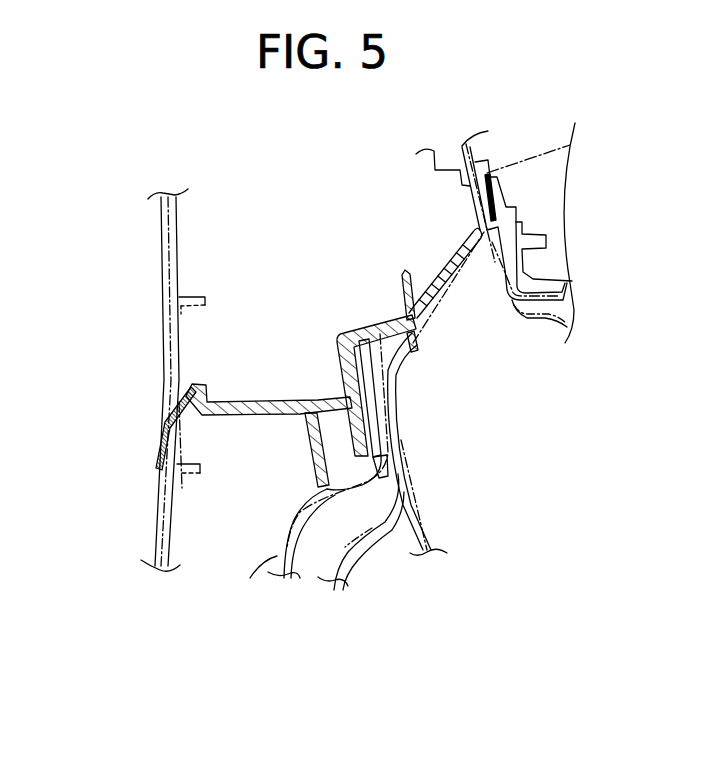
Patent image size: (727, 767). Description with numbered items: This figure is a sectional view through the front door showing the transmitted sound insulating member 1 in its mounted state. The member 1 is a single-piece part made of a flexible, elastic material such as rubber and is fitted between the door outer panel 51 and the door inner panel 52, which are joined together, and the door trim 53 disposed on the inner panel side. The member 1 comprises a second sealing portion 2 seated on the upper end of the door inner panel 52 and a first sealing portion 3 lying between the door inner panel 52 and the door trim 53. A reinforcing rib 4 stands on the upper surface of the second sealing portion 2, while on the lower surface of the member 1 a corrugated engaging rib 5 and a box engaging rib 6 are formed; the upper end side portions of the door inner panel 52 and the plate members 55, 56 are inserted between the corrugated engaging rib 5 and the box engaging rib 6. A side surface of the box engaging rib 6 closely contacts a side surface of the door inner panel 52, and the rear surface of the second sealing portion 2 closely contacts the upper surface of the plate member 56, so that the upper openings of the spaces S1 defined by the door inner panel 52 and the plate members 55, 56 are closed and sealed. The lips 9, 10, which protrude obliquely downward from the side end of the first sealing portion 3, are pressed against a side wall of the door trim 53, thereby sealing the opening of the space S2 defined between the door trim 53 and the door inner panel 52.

The transmitted sound insulating member 1 is at (296, 318).
The second sealing portion 2 is at (437, 249).
The first sealing portion 3 is at (240, 402).
The reinforcing rib 4 is at (405, 273).
The corrugated engaging rib 5 is at (398, 356).
The box engaging rib 6 is at (309, 453).
The lip 9 is at (130, 428).
The lip 10 is at (185, 398).
The door outer panel 51 is at (532, 312).
The door inner panel 52 is at (277, 557).
The door trim 53 is at (165, 343).
The plate member 55 is at (363, 542).
The plate member 56 is at (423, 515).
The space S1 is at (370, 508).
The space S2 is at (240, 535).